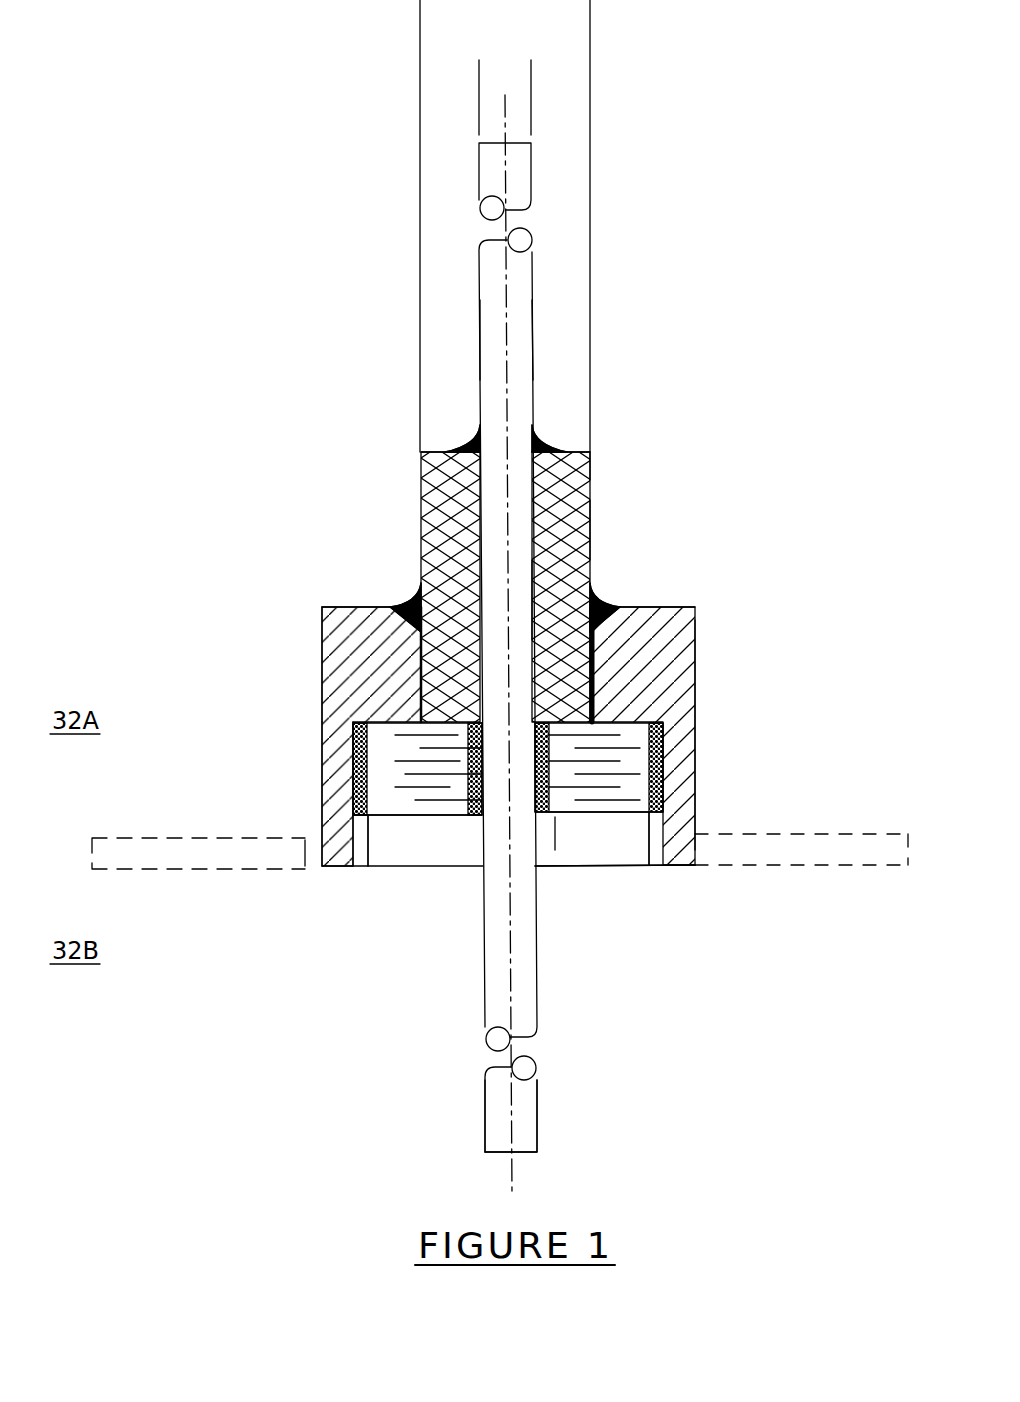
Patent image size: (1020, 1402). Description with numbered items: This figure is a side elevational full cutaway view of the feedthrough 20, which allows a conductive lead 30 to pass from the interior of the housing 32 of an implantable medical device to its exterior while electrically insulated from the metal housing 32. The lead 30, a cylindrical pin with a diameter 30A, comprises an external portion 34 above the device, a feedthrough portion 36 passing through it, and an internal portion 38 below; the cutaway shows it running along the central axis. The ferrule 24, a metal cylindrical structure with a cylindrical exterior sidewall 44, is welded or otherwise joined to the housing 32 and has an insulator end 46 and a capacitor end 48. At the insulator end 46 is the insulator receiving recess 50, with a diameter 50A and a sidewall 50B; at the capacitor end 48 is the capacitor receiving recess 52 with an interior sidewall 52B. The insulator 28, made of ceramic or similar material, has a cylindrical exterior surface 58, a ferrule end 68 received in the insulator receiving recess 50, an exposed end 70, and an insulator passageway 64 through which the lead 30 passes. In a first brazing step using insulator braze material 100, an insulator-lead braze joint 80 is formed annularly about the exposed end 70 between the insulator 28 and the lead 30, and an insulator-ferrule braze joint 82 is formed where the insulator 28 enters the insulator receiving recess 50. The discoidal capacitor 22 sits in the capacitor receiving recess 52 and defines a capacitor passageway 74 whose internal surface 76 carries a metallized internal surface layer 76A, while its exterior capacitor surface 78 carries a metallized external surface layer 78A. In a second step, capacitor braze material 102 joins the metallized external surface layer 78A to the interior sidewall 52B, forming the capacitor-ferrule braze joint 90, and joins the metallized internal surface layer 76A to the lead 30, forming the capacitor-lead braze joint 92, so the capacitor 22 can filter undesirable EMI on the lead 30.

The feedthrough 20 is at (788, 170).
The lead 30 is at (525, 286).
The lead diameter 30A is at (428, 68).
The external portion 34 is at (525, 364).
The internal portion 38 is at (537, 1022).
The insulator 28 is at (594, 489).
The insulator passageway 64 is at (590, 468).
The exposed end 70 is at (445, 452).
The cylindrical exterior surface 58 is at (590, 525).
The feedthrough portion 36 is at (590, 563).
The insulator-lead braze joint 80 is at (463, 447).
The insulator braze material 100 is at (478, 432).
The insulator-ferrule braze joint 82 is at (410, 602).
The ferrule 24 is at (693, 663).
The cylindrical exterior sidewall 44 is at (693, 710).
The insulator end 46 is at (613, 607).
The capacitor end 48 is at (680, 866).
The insulator receiving recess 50 is at (392, 657).
The insulator receiving recess diameter 50A is at (584, 12).
The insulator receiving recess sidewall 50B is at (321, 617).
The capacitor receiving recess 52 is at (587, 851).
The interior sidewall 52B is at (663, 848).
The ferrule end 68 is at (345, 692).
The capacitor 22 is at (663, 725).
The capacitor passageway 74 is at (400, 740).
The internal surface 76 is at (440, 777).
The metallized internal surface layer 76A is at (430, 806).
The exterior capacitor surface 78 is at (665, 773).
The metallized external surface layer 78A is at (665, 801).
The capacitor-ferrule braze joint 90 is at (360, 817).
The capacitor-lead braze joint 92 is at (465, 823).
The capacitor braze material 102 is at (305, 835).
The housing 32 is at (165, 845).